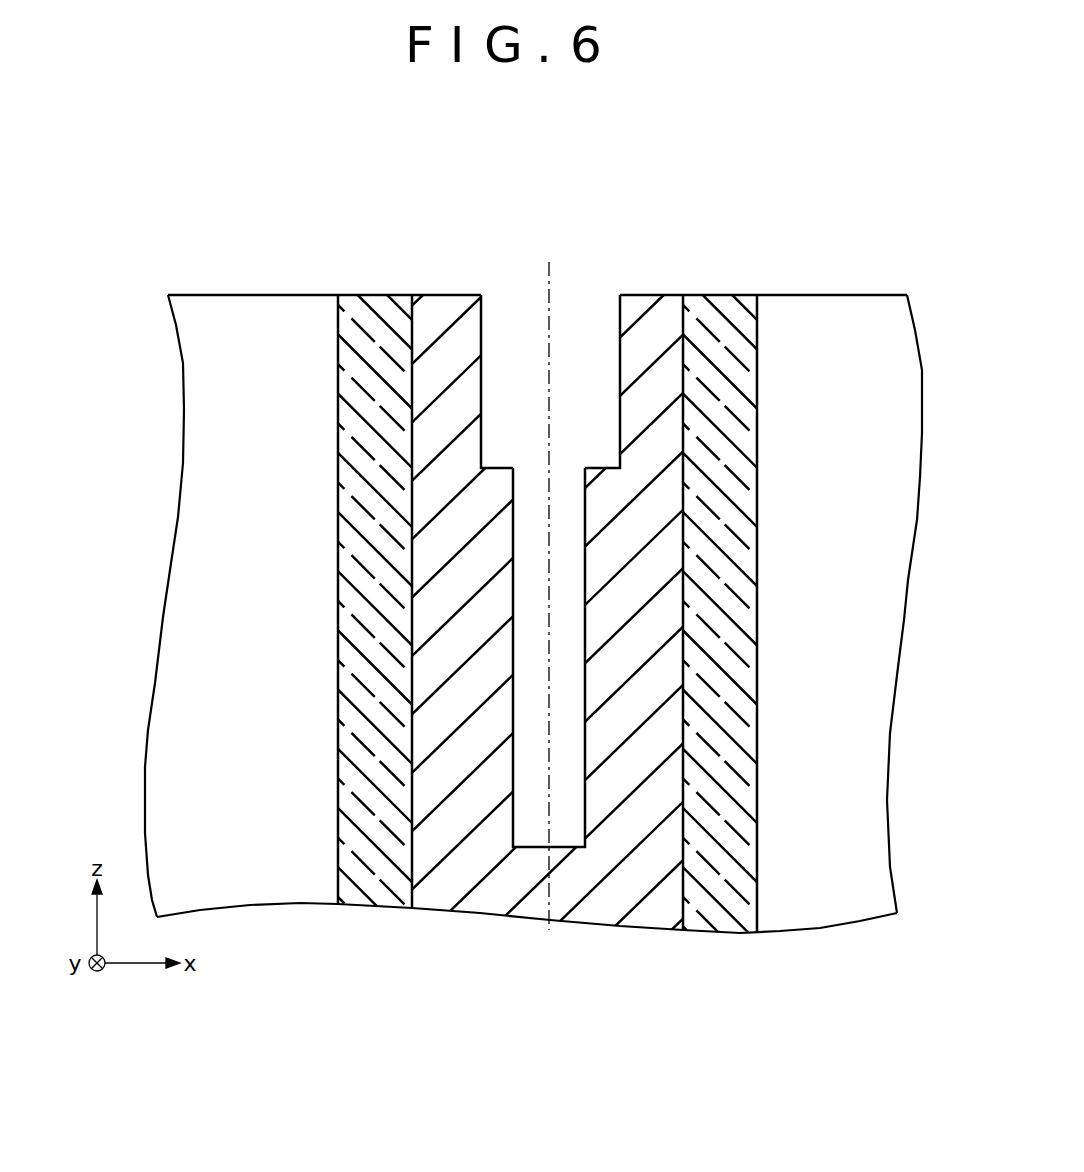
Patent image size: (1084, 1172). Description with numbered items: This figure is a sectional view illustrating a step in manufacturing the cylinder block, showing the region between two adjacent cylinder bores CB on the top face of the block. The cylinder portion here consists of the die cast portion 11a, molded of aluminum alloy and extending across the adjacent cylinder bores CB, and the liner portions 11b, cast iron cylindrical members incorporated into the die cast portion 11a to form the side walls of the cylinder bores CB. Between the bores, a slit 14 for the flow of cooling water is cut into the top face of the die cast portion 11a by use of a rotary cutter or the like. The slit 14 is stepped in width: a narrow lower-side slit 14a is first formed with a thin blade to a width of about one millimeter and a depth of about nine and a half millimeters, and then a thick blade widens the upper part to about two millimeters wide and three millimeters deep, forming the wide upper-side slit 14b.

The die cast portion 11a is at (542, 656).
The liner portion 11b is at (377, 302).
The slit 14 is at (528, 623).
The lower-side slit 14a is at (549, 657).
The upper-side slit 14b is at (485, 294).
The cylinder bore CB is at (253, 892).